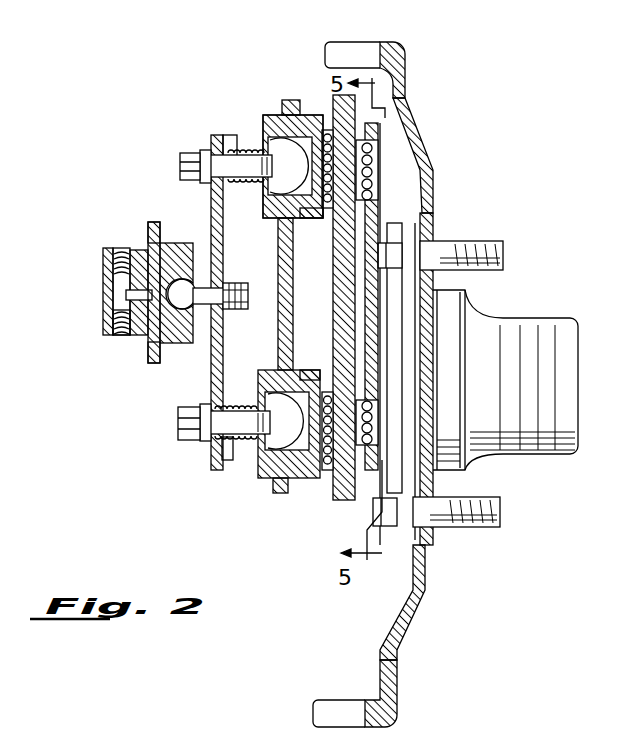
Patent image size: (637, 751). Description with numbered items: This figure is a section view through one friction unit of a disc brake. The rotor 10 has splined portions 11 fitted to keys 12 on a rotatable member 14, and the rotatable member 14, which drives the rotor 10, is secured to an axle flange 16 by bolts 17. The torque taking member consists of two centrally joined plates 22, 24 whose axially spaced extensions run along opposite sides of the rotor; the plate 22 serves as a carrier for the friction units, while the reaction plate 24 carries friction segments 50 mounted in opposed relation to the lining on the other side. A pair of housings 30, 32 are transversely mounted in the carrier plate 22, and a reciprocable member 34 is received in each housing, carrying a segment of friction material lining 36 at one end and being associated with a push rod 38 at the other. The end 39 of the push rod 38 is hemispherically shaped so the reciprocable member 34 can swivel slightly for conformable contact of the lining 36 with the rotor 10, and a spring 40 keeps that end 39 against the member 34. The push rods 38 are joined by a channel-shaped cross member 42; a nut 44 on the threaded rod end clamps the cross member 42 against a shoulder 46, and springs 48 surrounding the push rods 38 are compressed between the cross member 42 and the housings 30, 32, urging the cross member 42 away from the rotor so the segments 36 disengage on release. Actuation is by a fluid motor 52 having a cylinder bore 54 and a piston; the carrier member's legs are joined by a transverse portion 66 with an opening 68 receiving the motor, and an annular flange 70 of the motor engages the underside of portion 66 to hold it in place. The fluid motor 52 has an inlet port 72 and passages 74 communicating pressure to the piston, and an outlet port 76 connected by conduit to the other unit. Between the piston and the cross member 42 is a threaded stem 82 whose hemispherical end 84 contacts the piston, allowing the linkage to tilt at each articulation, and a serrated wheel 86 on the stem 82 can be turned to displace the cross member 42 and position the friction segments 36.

The rotor 10 is at (338, 98).
The splined portions 11 is at (339, 48).
The keys 12 is at (397, 47).
The rotatable member 14 is at (400, 110).
The axle flange 16 is at (436, 212).
The bolts 17 is at (488, 246).
The plate 22 is at (287, 298).
The reaction plate 24 is at (363, 487).
The housing 30 is at (268, 113).
The housing 32 is at (268, 462).
The reciprocable member 34 is at (272, 215).
The friction material lining 36 is at (294, 222).
The push rod 38 is at (242, 155).
The end of the push rod 39 is at (272, 187).
The spring 40 is at (297, 112).
The cross member 42 is at (208, 383).
The nut 44 is at (200, 166).
The shoulder 46 is at (210, 158).
The springs 48 is at (228, 183).
The friction segments 50 is at (377, 147).
The fluid motor 52 is at (107, 293).
The cylinder bore 54 is at (148, 340).
The transverse portion 66 is at (160, 240).
The opening 68 is at (150, 248).
The annular flange 70 is at (162, 240).
The inlet port 72 is at (103, 262).
The passages 74 is at (130, 297).
The outlet port 76 is at (115, 322).
The threaded stem 82 is at (233, 285).
The hemispherical end 84 is at (127, 330).
The serrated wheel 86 is at (205, 318).